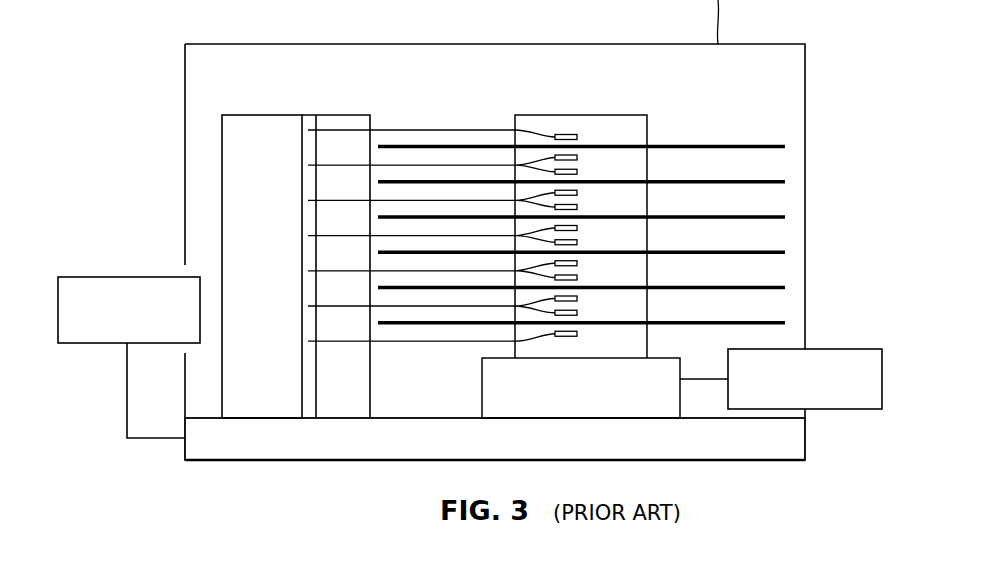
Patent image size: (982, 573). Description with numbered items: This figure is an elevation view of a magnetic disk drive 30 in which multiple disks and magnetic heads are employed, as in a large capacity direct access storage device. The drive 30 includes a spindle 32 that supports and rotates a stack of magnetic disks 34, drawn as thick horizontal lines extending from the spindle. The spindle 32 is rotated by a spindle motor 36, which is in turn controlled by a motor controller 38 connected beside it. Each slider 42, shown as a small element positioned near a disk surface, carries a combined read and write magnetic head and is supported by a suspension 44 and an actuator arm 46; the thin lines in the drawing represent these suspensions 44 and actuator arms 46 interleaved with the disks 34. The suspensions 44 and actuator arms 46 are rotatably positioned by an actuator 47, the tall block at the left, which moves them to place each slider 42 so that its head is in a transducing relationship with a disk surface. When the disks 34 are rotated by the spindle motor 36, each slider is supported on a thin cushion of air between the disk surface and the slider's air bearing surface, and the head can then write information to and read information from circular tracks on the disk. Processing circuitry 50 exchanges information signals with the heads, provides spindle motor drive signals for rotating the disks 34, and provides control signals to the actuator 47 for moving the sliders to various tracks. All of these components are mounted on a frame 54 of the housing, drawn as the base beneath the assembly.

The magnetic disk drive 30 is at (695, 118).
The spindle 32 is at (636, 115).
The magnetic disk 34 is at (777, 149).
The spindle motor 36 is at (569, 401).
The motor controller 38 is at (840, 409).
The slider 42 is at (577, 158).
The suspension 44 is at (552, 152).
The actuator arm 46 is at (485, 163).
The actuator 47 is at (262, 115).
The processing circuitry 50 is at (100, 277).
The frame 54 is at (237, 456).